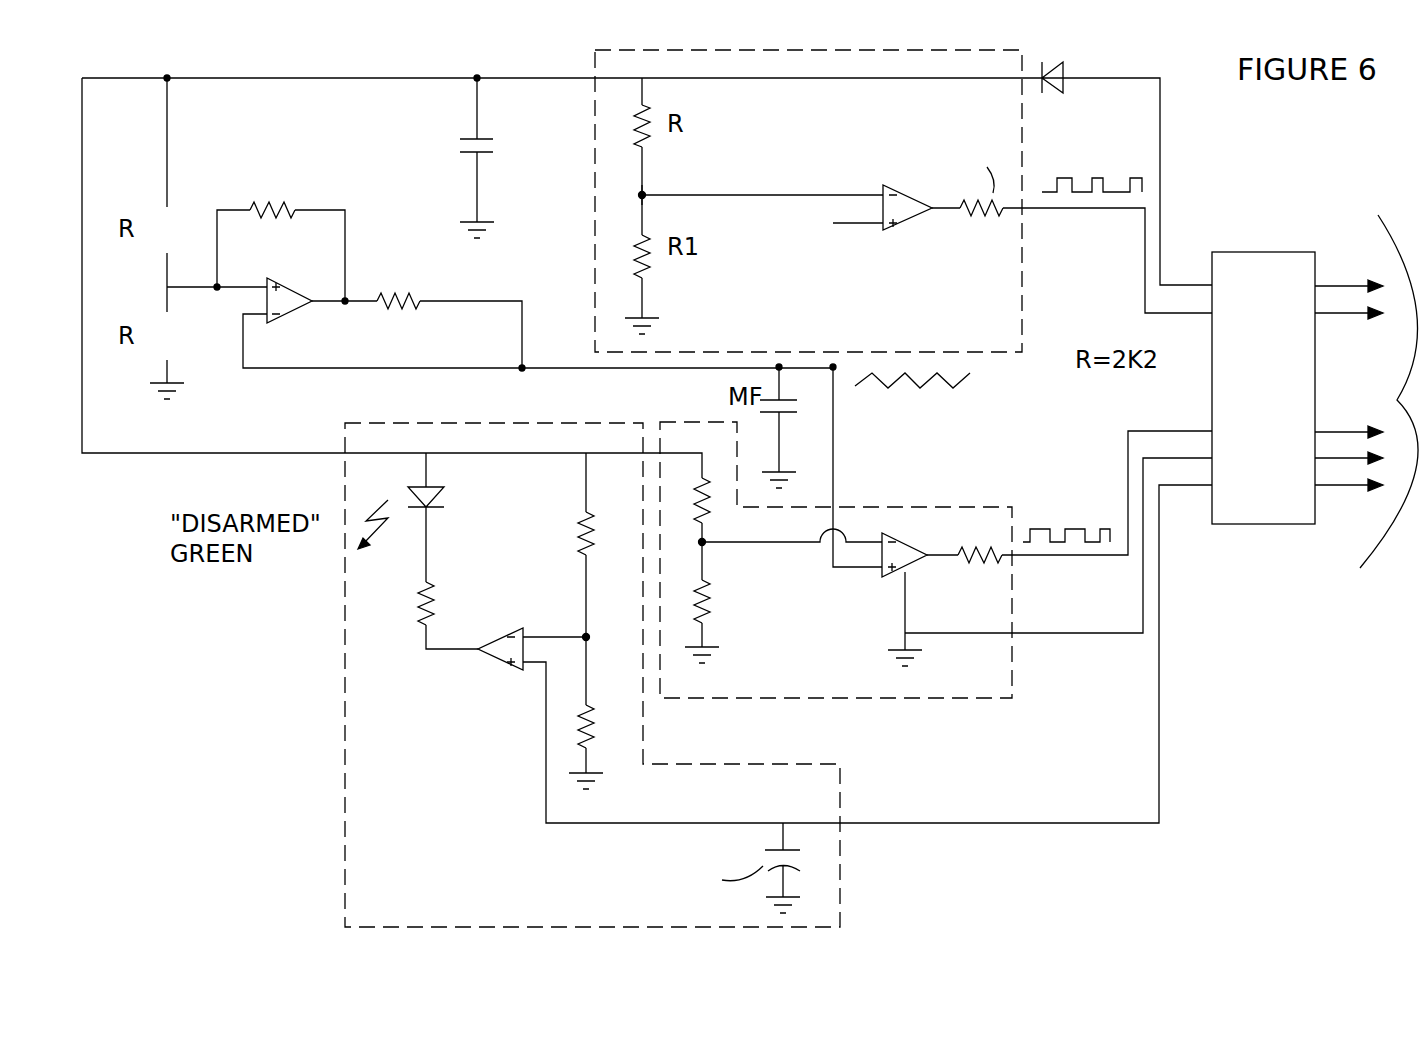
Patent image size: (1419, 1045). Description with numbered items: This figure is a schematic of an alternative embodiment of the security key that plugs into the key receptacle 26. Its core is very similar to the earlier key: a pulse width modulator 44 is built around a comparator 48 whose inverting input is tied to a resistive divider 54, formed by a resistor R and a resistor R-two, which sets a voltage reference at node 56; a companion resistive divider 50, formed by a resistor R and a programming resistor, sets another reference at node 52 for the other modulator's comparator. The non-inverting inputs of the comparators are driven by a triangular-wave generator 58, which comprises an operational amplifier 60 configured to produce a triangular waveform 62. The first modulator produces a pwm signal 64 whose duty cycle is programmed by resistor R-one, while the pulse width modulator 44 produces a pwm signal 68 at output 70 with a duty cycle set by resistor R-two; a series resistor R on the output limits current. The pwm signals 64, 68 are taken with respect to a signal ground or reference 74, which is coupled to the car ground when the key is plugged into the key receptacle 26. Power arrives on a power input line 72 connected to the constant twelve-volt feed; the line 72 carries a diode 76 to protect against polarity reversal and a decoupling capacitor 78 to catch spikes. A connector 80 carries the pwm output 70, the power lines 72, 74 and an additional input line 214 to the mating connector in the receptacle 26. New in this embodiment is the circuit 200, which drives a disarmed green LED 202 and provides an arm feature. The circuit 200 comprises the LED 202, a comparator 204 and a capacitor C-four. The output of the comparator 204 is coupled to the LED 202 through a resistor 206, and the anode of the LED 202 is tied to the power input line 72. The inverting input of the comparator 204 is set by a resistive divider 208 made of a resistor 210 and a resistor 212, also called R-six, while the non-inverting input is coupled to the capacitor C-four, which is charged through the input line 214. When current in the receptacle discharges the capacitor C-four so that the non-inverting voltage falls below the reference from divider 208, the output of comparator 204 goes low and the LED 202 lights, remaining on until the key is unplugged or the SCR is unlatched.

The key receptacle 26 is at (1302, 419).
The pulse width modulator 44 is at (990, 500).
The comparator 48 is at (908, 533).
The resistive divider 50 is at (680, 180).
The node 52 is at (624, 195).
The resistive divider 54 is at (792, 603).
The node 56 is at (706, 547).
The triangular-wave generator 58 is at (368, 264).
The operational amplifier 60 is at (284, 318).
The triangular waveform 62 is at (942, 393).
The pwm signal 64 is at (1063, 167).
The pwm signal 68 is at (1097, 520).
The output 70 is at (1098, 563).
The power input line 72 is at (1168, 200).
The signal ground or reference 74 is at (1105, 643).
The diode 76 is at (1073, 64).
The decoupling capacitor 78 is at (495, 133).
The connector 80 is at (1240, 240).
The circuit 200 is at (850, 913).
The LED 202 is at (430, 479).
The comparator 204 is at (485, 663).
The resistor 206 is at (445, 624).
The resistive divider 208 is at (562, 618).
The resistor 210 is at (572, 528).
The resistor 212 is at (575, 722).
The input line 214 is at (1012, 826).